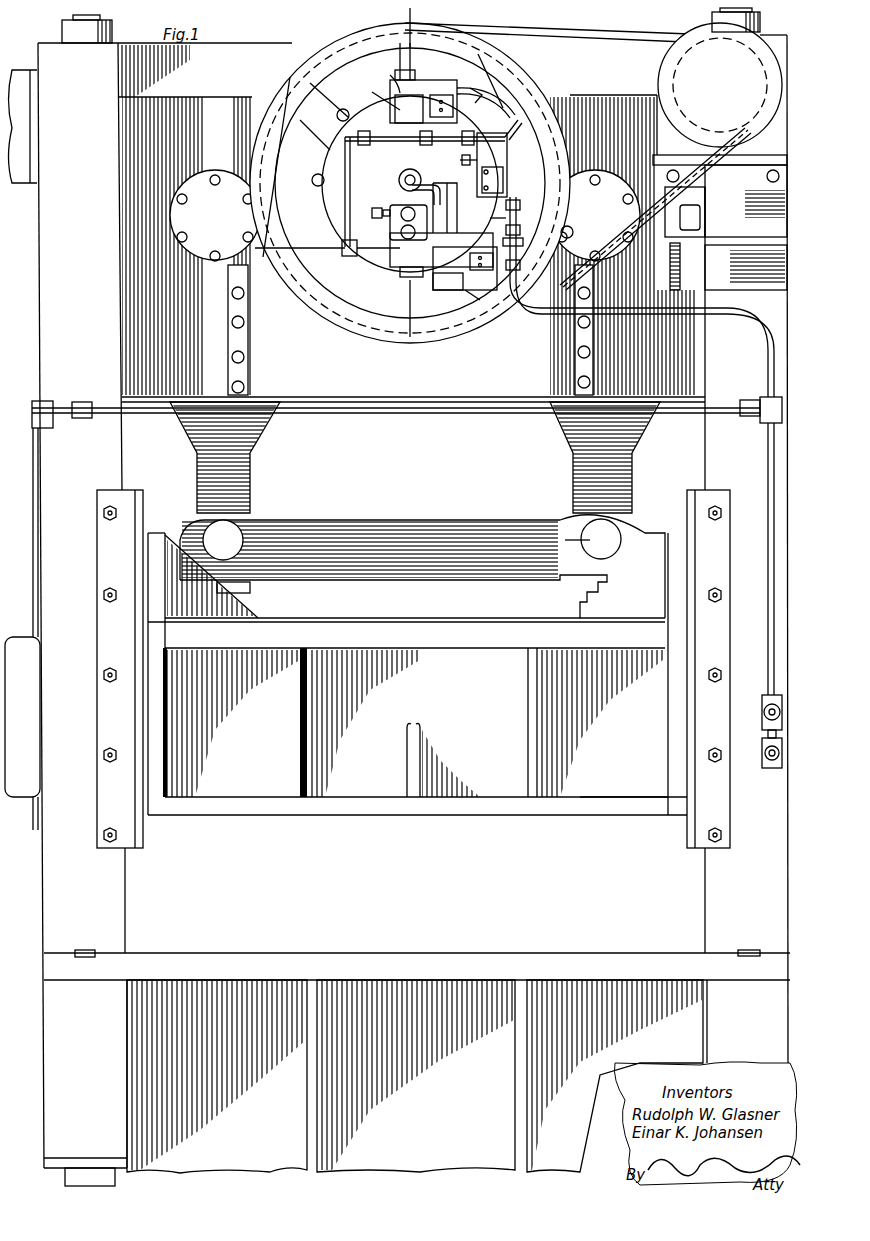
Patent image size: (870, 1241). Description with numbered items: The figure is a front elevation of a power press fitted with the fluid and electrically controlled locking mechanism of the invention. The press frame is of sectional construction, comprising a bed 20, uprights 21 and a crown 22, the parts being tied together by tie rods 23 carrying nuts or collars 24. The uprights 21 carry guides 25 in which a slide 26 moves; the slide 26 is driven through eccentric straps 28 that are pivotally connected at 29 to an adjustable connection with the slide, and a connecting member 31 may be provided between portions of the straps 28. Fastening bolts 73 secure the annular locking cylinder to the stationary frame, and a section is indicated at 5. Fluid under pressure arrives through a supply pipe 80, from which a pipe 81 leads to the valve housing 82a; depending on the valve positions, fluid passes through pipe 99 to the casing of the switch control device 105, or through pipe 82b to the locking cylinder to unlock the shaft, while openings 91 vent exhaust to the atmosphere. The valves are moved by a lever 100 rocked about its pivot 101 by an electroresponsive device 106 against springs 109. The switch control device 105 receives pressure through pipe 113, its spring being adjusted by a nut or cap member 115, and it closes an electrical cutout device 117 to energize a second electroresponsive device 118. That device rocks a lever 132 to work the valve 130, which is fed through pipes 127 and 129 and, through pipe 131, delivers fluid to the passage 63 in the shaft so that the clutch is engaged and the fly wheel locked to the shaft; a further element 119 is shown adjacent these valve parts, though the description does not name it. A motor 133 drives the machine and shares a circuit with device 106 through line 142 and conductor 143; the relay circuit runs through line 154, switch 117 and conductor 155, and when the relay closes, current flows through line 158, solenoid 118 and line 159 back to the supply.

The section line 5- 5 is at (392, 24).
The bed 20 is at (264, 956).
The uprights 21 is at (116, 931).
The crown 22 is at (135, 246).
The tie rods 23 is at (100, 18).
The nuts or collars 24 is at (62, 27).
The guides 25 is at (130, 827).
The slide 26 is at (378, 800).
The eccentric straps 28 is at (251, 458).
The pivotal connection 29 is at (227, 533).
The connecting member 31 is at (352, 525).
The passage 63 is at (365, 141).
The fastening bolts 73 is at (322, 126).
The supply pipe 80 is at (318, 250).
The pipe 81 is at (351, 190).
The valve housing 82a is at (381, 79).
The pipe 82b is at (369, 96).
The openings 91 is at (290, 87).
The pipe 99 is at (421, 172).
The lever 100 is at (425, 80).
The pivot 101 is at (411, 109).
The switch control device 105 is at (508, 150).
The electroresponsive device 106 is at (448, 92).
The springs 109 is at (440, 76).
The pipe 113 is at (469, 170).
The adjustable nut or cap member 115 is at (517, 125).
The electrical cutout device 117 is at (507, 181).
The electroresponsive device 118 is at (473, 275).
The valve 119 is at (392, 236).
The pipe 127 is at (386, 205).
The pipe 129 is at (400, 192).
The valve 130 is at (440, 280).
The pipe 131 is at (450, 205).
The lever 132 is at (466, 292).
The motor 133 is at (663, 80).
The line 142 is at (483, 92).
The conductor 143 is at (503, 105).
The line 154 is at (505, 219).
The conductor 155 is at (513, 205).
The line 158 is at (514, 237).
The line 159 is at (515, 263).